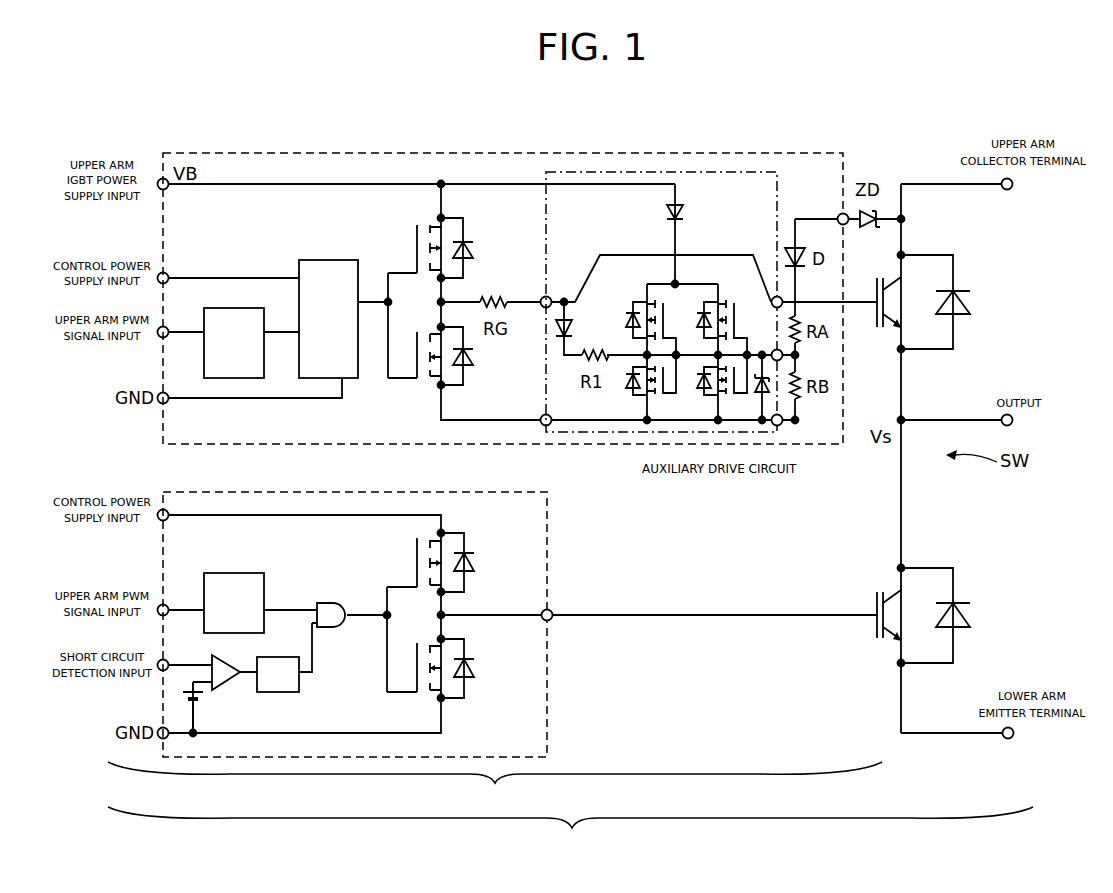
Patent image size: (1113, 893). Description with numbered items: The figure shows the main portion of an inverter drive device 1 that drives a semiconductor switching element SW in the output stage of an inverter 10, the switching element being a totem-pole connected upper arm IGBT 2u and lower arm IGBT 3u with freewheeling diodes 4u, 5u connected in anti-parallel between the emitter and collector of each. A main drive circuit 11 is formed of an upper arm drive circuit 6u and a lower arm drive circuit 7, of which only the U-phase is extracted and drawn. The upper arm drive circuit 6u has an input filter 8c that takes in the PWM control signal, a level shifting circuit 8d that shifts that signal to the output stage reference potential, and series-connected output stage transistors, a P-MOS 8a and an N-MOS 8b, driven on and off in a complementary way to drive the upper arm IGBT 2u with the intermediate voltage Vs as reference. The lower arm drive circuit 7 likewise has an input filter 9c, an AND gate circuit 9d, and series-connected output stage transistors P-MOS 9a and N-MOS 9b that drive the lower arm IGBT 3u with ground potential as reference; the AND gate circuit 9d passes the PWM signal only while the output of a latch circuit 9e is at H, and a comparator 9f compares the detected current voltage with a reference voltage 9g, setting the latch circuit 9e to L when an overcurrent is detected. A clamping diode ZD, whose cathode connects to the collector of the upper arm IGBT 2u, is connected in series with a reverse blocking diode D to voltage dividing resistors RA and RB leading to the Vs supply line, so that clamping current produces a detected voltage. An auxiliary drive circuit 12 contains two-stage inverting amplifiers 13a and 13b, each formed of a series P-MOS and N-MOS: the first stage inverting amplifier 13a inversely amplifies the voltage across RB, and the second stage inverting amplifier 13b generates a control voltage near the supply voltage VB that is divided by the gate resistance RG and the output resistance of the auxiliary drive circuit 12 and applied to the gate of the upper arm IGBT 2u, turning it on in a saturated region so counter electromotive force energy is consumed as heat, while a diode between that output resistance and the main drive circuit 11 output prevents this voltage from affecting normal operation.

The inverter drive device 1 is at (495, 787).
The inverter 10 is at (570, 832).
The main drive circuit 11 is at (392, 198).
The auxiliary drive circuit 12 is at (606, 198).
The first stage inverting amplifier 13a is at (719, 266).
The second stage inverting amplifier 13b is at (620, 305).
The upper arm IGBT 2u is at (897, 296).
The lower arm IGBT 3u is at (897, 612).
The freewheeling diode 4u is at (968, 300).
The freewheeling diode 5u is at (966, 612).
The upper arm drive circuit 6u is at (476, 430).
The lower arm drive circuit 7 is at (523, 533).
The P-MOS 8a is at (416, 236).
The N-MOS 8b is at (417, 379).
The input filter 8c is at (232, 379).
The level shifting circuit 8d is at (299, 261).
The P-MOS 9a is at (416, 560).
The N-MOS 9b is at (417, 691).
The input filter 9c is at (236, 572).
The AND gate circuit 9d is at (330, 602).
The latch circuit 9e is at (300, 692).
The comparator 9f is at (211, 656).
The reference voltage 9g is at (204, 701).